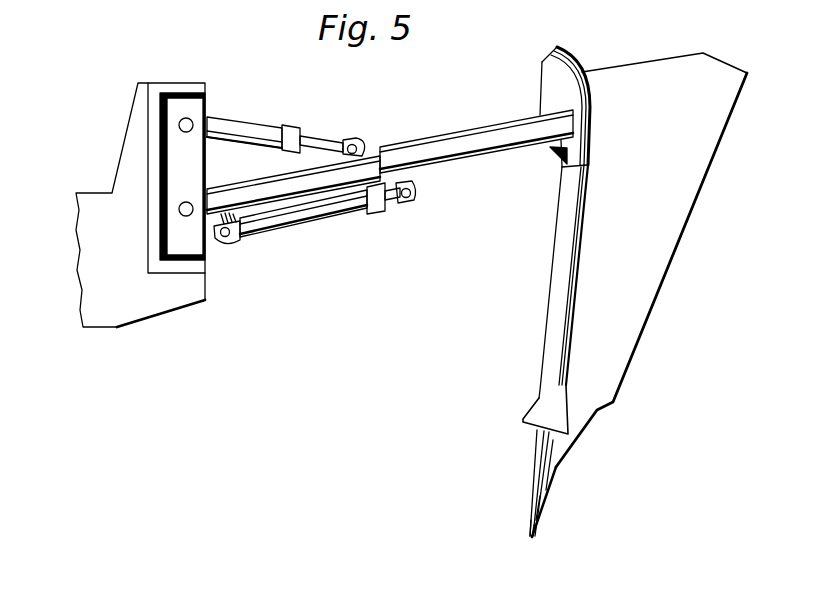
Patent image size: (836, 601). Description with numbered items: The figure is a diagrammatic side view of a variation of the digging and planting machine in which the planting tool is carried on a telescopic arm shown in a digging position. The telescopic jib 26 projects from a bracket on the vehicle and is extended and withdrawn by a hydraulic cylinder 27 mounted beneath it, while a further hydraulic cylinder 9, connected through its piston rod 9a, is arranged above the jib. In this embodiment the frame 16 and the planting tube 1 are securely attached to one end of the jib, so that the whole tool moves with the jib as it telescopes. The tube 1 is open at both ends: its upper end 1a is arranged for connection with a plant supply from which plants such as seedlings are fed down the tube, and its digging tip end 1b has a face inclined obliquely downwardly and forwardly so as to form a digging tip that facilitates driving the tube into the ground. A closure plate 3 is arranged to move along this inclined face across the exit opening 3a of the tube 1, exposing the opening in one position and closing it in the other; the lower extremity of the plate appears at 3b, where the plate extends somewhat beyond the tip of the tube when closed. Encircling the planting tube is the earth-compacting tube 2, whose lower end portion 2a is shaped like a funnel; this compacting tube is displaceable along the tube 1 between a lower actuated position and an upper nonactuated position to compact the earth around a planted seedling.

The tube 1 is at (538, 467).
The upper end 1a is at (547, 50).
The digging tip end 1b is at (527, 527).
The earth-compacting tube 2 is at (557, 262).
The lower end portion 2a is at (537, 413).
The closure plate 3 is at (550, 495).
The exit opening 3a is at (537, 503).
The wear strip tip 3b is at (526, 537).
The hydraulic cylinder 9 is at (242, 127).
The piston rod 9a is at (329, 143).
The frame 16 is at (653, 260).
The telescopic jib 26 is at (463, 146).
The hydraulic cylinder 27 is at (302, 213).